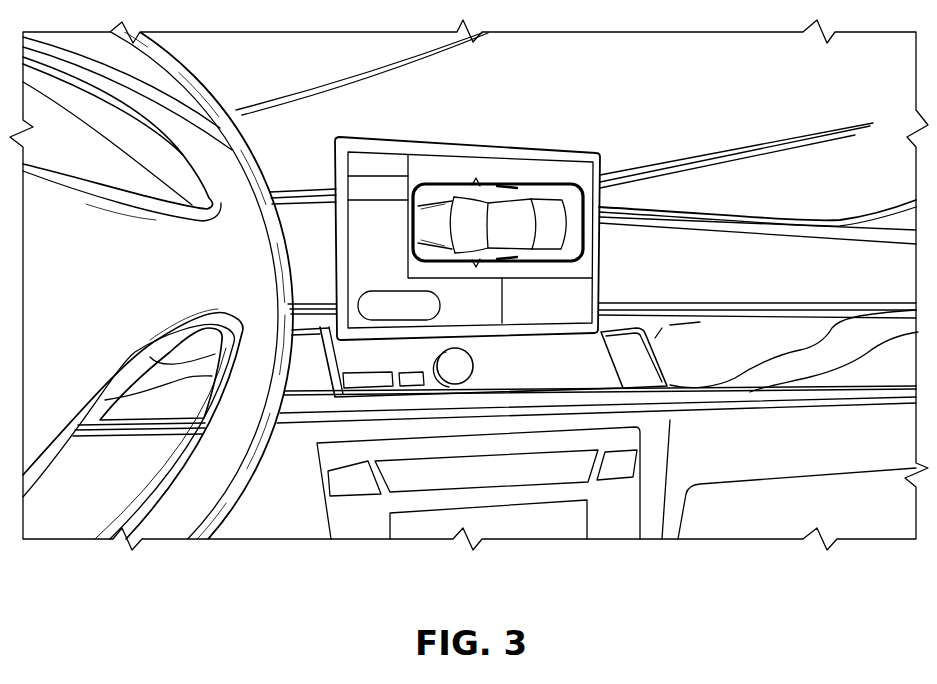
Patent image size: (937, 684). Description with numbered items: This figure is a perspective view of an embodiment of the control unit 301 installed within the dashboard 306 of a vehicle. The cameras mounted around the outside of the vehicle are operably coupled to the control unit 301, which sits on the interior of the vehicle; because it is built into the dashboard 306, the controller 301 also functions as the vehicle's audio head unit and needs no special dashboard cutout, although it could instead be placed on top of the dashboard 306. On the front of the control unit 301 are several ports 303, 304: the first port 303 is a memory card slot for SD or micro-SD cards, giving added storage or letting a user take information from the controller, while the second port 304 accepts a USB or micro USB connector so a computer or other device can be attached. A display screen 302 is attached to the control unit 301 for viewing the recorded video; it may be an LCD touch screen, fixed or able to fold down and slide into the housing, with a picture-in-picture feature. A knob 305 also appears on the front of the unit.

The control unit 301 is at (474, 137).
The display screen 302 is at (577, 152).
The first port 303 is at (363, 390).
The second port 304 is at (417, 389).
The knob 305 is at (474, 372).
The dashboard 306 is at (665, 362).